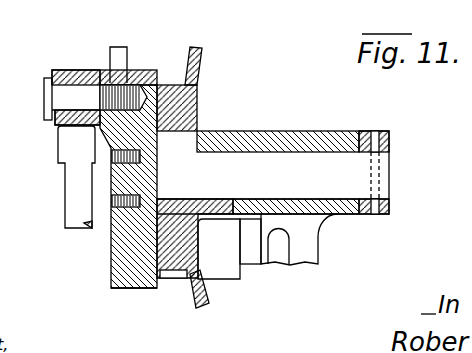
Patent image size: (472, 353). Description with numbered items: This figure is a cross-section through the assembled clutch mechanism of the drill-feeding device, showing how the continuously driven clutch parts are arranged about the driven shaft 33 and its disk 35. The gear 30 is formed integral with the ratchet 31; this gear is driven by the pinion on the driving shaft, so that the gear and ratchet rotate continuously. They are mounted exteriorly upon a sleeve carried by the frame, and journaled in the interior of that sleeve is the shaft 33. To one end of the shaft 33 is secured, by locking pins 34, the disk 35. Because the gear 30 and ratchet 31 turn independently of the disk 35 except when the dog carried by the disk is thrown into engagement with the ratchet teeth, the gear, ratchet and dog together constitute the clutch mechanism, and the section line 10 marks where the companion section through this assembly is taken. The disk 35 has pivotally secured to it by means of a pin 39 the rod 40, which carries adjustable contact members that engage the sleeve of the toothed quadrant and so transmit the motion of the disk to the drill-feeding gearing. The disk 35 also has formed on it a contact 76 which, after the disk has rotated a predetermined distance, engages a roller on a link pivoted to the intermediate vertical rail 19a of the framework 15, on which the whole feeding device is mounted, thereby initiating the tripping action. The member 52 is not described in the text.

The section line 10— 10 is at (155, 73).
The framework 15 is at (323, 246).
The intermediate vertical rail 19a is at (243, 250).
The gear 30 is at (202, 61).
The ratchet 31 is at (168, 83).
The shaft 33 is at (314, 160).
The locking pins 34 is at (112, 162).
The disk 35 is at (112, 282).
The pin 39 is at (53, 102).
The rod 40 is at (65, 190).
The tube 52 is at (268, 138).
The contact 76 is at (110, 50).